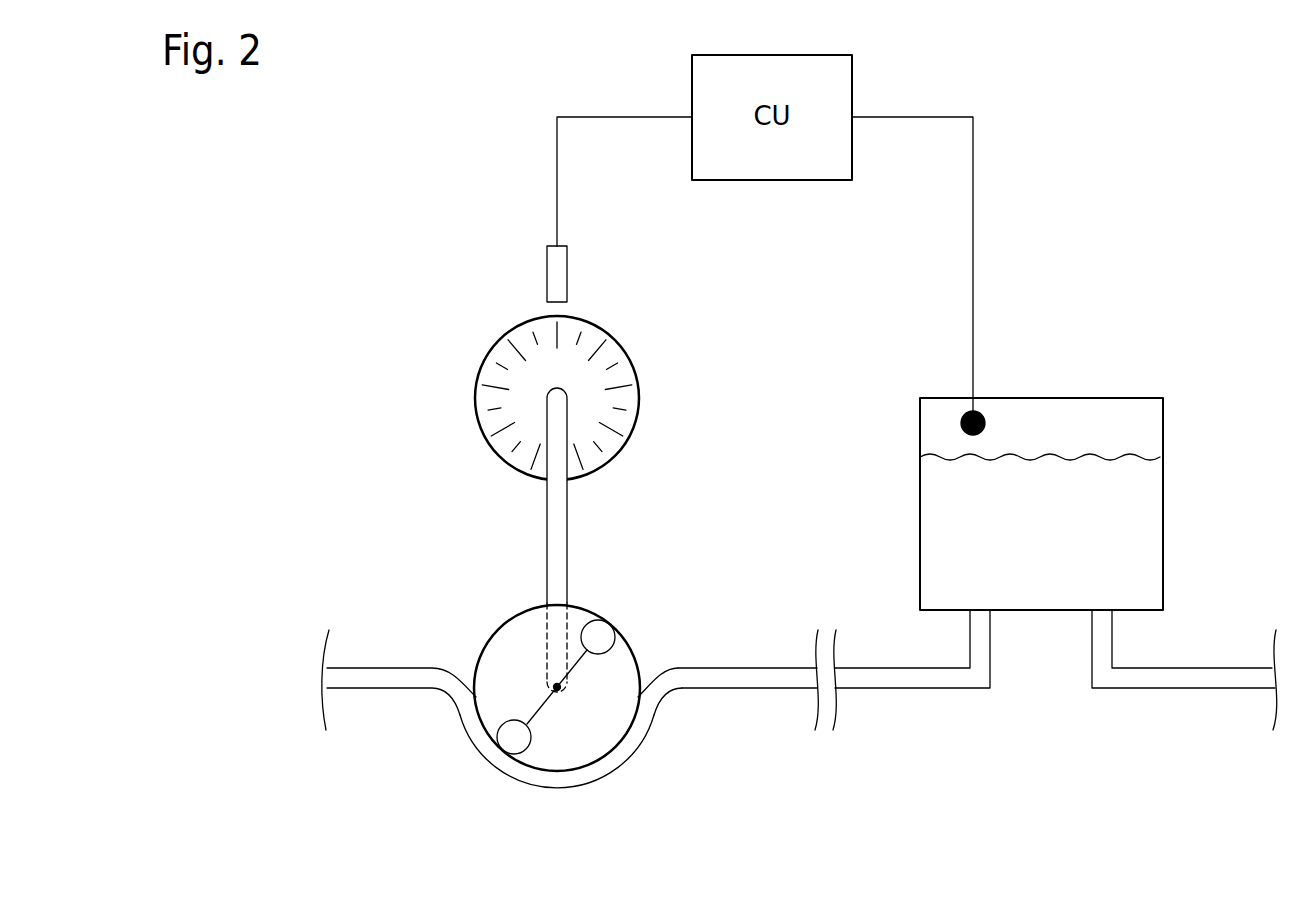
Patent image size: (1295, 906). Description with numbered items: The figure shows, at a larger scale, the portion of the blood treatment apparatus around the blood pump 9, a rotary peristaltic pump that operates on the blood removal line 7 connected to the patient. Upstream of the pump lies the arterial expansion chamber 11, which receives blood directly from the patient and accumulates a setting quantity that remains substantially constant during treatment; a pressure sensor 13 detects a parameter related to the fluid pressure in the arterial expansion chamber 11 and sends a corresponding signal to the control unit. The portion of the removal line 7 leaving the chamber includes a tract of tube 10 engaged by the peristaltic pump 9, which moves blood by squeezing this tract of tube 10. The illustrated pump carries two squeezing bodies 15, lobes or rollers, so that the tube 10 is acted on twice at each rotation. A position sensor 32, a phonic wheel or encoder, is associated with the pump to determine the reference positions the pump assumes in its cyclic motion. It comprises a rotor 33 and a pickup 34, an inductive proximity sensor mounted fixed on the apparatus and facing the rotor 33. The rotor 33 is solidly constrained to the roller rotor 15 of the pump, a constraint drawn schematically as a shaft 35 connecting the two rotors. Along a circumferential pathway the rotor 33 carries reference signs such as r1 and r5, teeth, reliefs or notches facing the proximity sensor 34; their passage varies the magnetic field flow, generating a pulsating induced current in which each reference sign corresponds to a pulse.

The removal line 7 is at (885, 675).
The blood pump 9 is at (668, 638).
The tube 10 is at (617, 758).
The arterial expansion chamber 11 is at (1130, 338).
The pressure sensor 13 is at (958, 420).
The squeezing bodies 15 is at (598, 635).
The position sensor 32 is at (430, 283).
The rotor 33 is at (452, 406).
The pickup 34 is at (567, 262).
The shaft 35 is at (556, 563).
The reference sign r1 is at (553, 338).
The reference sign r5 is at (622, 388).